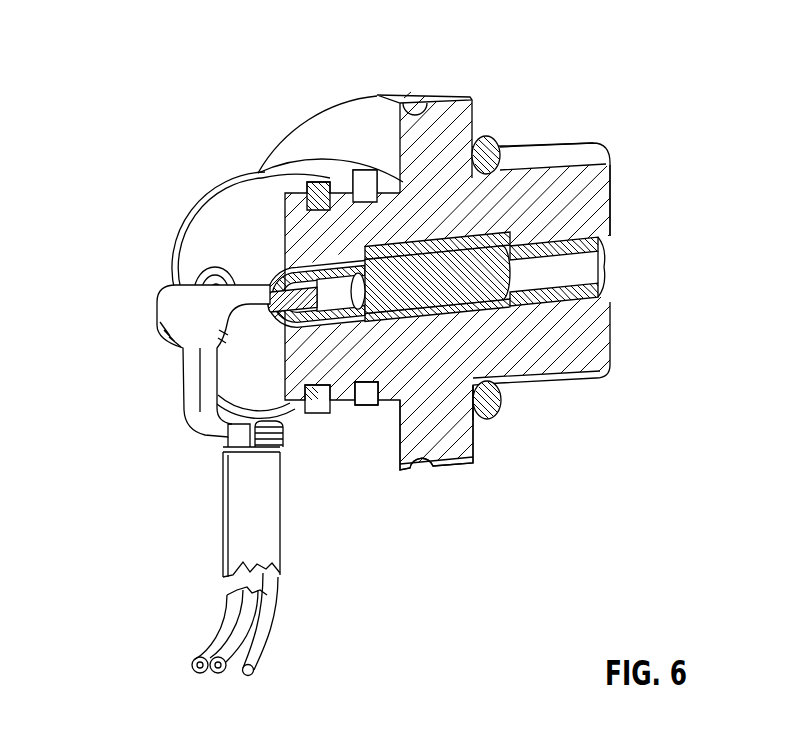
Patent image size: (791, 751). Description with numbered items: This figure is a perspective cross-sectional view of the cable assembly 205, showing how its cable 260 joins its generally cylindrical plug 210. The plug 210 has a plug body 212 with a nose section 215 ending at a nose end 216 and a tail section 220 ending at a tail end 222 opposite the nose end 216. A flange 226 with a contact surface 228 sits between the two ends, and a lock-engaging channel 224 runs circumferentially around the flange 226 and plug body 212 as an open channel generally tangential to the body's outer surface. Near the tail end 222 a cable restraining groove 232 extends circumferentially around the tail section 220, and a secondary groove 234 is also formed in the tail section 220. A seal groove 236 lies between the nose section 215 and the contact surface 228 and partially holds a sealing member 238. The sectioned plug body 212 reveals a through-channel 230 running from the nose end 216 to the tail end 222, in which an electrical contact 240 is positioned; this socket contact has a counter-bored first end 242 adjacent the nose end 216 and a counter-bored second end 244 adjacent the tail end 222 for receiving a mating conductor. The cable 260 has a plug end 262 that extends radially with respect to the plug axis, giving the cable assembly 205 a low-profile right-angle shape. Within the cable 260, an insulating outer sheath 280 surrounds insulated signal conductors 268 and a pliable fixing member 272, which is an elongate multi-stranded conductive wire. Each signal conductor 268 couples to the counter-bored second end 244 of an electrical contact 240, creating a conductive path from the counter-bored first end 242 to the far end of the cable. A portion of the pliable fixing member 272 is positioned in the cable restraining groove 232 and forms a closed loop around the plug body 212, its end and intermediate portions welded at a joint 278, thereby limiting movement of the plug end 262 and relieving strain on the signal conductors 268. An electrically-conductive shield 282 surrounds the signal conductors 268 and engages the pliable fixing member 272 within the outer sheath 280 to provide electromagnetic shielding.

The cable assembly 205 is at (125, 115).
The plug 210 is at (567, 62).
The plug body 212 is at (568, 175).
The nose section 215 is at (548, 140).
The nose end 216 is at (607, 200).
The tail section 220 is at (190, 248).
The tail end 222 is at (183, 280).
The lock-engaging channel 224 is at (422, 98).
The flange 226 is at (470, 113).
The contact surface 228 is at (473, 450).
The through-channel 230 is at (605, 285).
The cable restraining groove 232 is at (307, 175).
The secondary groove 234 is at (365, 405).
The seal groove 236 is at (503, 393).
The sealing member 238 is at (500, 420).
The electrical contact 240 is at (547, 300).
The counter-bored first end 242 is at (590, 272).
The counter-bored second end 244 is at (262, 198).
The cable 260 is at (233, 485).
The plug end 262 is at (227, 452).
The insulated signal conductor 268 is at (163, 305).
The pliable fixing member 272 is at (277, 607).
The joint 278 is at (283, 443).
The outer sheath 280 is at (235, 523).
The electrically-conductive shield 282 is at (233, 587).